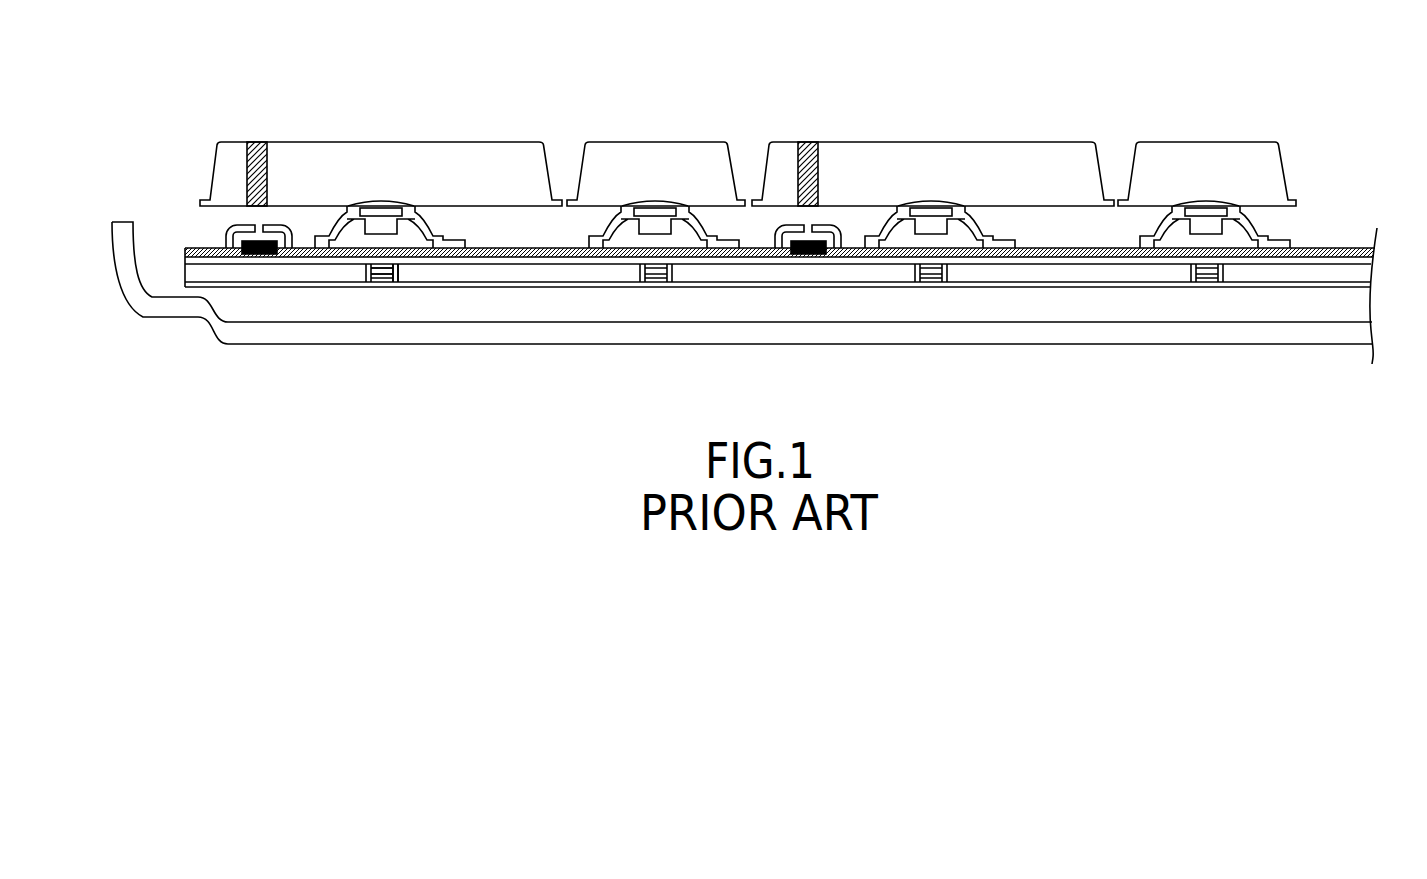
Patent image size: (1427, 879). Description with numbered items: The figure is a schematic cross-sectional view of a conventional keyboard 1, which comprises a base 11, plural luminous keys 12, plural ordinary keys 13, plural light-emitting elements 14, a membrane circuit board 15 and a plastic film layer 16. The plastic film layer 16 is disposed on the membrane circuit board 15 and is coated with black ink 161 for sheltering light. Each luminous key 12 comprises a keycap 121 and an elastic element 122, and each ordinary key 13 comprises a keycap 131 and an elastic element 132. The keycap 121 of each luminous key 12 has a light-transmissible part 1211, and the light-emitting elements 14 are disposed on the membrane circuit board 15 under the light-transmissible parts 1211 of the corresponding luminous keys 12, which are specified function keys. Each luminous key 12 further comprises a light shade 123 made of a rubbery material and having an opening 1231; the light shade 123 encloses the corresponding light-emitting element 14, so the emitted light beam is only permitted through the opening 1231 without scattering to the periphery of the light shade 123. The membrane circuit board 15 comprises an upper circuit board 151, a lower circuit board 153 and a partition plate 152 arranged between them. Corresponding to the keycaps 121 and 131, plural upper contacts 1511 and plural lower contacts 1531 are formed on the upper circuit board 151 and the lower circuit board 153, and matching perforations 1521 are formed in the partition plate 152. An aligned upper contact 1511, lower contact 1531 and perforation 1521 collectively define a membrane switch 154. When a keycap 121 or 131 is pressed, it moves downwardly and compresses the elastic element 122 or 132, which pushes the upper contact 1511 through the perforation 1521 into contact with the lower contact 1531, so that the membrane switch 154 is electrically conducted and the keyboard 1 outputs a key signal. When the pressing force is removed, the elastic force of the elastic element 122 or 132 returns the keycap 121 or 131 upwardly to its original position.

The keyboard 1 is at (1244, 35).
The base 11 is at (960, 333).
The luminous key 12 is at (614, 224).
The keycap 121 is at (390, 152).
The light-transmissible part 1211 is at (267, 142).
The elastic element 122 is at (433, 232).
The light shade 123 is at (541, 243).
The opening 1231 is at (257, 227).
The ordinary key 13 is at (943, 163).
The keycap 131 is at (655, 152).
The elastic element 132 is at (707, 232).
The light-emitting element 14 is at (237, 255).
The membrane circuit board 15 is at (778, 345).
The upper circuit board 151 is at (1247, 257).
The partition plate 152 is at (1250, 270).
The lower circuit board 153 is at (1333, 392).
The membrane switch 154 is at (752, 353).
The perforation 1521 is at (368, 268).
The lower contact 1531 is at (383, 278).
The upper contact 1511 is at (438, 330).
The plastic film layer 16 is at (773, 226).
The black ink 161 is at (1323, 248).